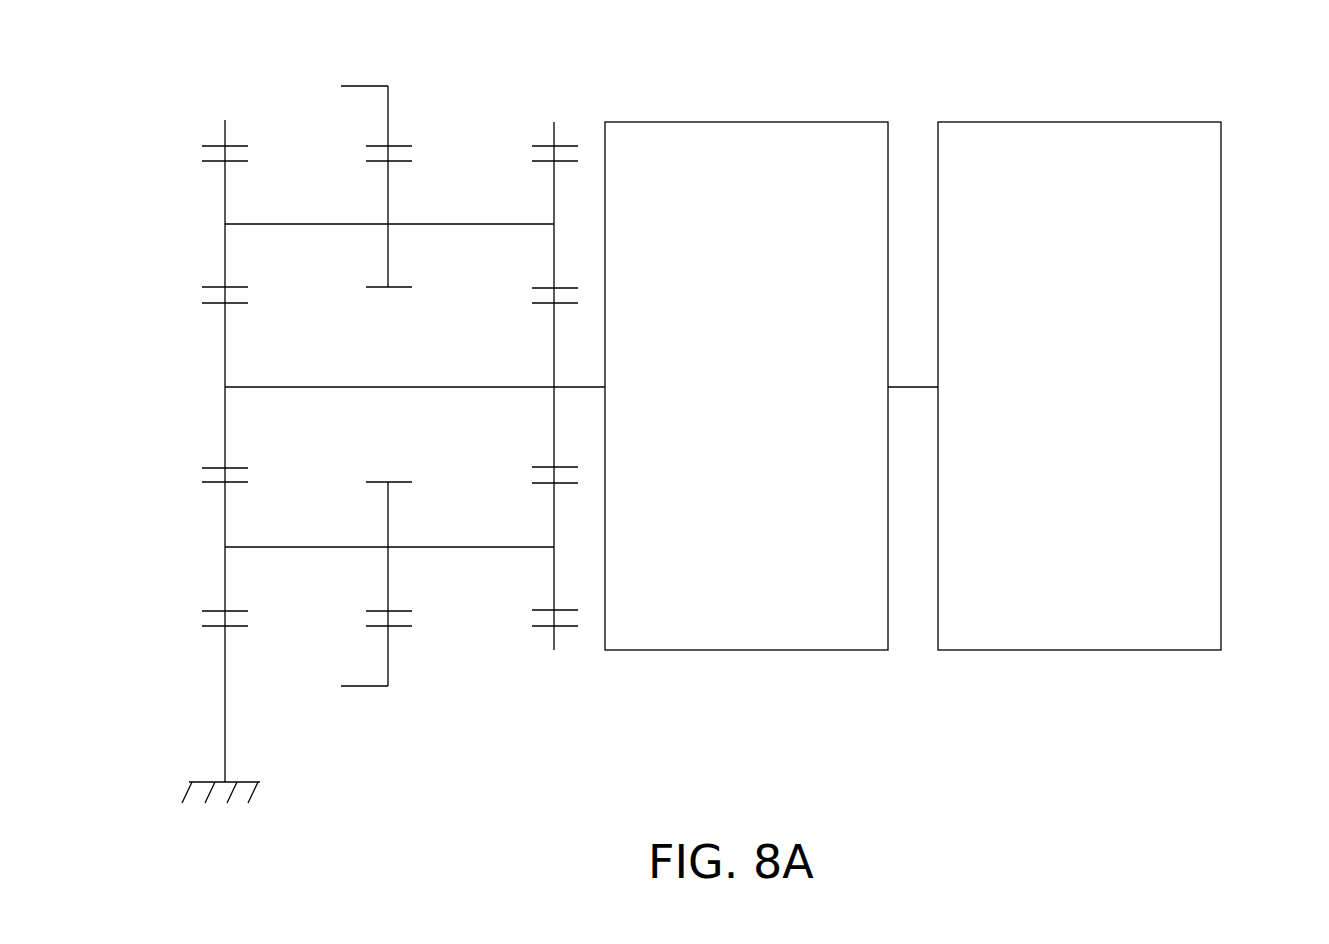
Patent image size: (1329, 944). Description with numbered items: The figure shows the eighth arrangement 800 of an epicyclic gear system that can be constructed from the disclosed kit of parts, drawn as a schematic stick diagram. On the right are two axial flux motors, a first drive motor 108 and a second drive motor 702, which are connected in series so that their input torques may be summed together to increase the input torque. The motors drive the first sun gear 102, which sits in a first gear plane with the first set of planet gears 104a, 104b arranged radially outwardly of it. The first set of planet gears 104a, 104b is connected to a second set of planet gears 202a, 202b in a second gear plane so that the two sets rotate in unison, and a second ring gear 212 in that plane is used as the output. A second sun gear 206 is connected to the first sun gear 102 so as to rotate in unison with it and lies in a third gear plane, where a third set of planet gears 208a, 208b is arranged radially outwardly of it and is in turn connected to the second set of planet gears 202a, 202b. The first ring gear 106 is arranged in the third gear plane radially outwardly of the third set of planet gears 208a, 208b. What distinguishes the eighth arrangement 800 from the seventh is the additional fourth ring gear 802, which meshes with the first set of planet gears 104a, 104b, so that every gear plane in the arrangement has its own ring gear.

The first sun gear 102 is at (554, 343).
The first set of planet gears 104a is at (547, 161).
The first set of planet gears 104b is at (547, 610).
The first ring gear 106 is at (219, 146).
The first drive motor 108 is at (668, 122).
The second set of planet gears 202a is at (388, 200).
The second set of planet gears 202b is at (388, 525).
The second sun gear 206 is at (225, 343).
The third set of planet gears 208a is at (225, 200).
The third set of planet gears 208b is at (225, 525).
The second ring gear 212 is at (365, 86).
The second drive motor 702 is at (1003, 122).
The eighth arrangement 800 is at (1223, 84).
The fourth ring gear 802 is at (547, 146).